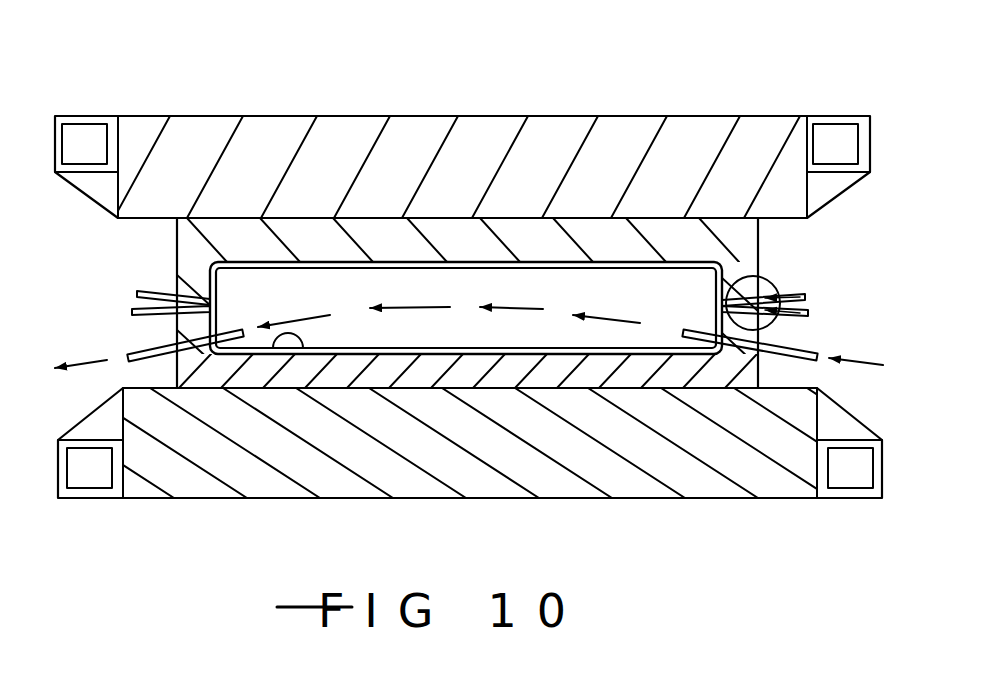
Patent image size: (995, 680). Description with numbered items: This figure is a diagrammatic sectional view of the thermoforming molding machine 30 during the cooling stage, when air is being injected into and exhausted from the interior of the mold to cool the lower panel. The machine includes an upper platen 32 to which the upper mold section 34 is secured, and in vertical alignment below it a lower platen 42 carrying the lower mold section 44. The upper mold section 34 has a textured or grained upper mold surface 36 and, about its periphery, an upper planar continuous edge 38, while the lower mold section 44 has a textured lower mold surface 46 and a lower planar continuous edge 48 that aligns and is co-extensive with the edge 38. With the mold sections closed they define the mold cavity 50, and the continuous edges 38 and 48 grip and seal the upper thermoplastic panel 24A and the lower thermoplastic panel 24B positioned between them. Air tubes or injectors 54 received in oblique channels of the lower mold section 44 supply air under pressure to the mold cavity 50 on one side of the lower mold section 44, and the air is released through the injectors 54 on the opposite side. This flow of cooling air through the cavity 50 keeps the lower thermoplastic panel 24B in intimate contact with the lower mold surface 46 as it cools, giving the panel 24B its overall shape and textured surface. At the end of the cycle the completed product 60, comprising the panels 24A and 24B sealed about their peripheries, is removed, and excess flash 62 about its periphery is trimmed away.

The thermoforming molding machine 30 is at (462, 90).
The upper platen 32 is at (218, 130).
The upper mold section 34 is at (630, 242).
The upper mold surface 36 is at (407, 270).
The mold cavity 50 is at (670, 305).
The completed product or part 60 is at (695, 250).
The lower mold section 44 is at (588, 368).
The lower platen 42 is at (398, 477).
The lower mold surface 46 is at (302, 352).
The lower planar continuous edge 48 is at (773, 340).
The excess material or flash 62 is at (772, 300).
The upper planar continuous edge 38 is at (740, 290).
The air tubes or air injectors 54 is at (158, 343).
The upper thermoplastic panel 24A is at (294, 301).
The lower thermoplastic panel 24B is at (400, 348).